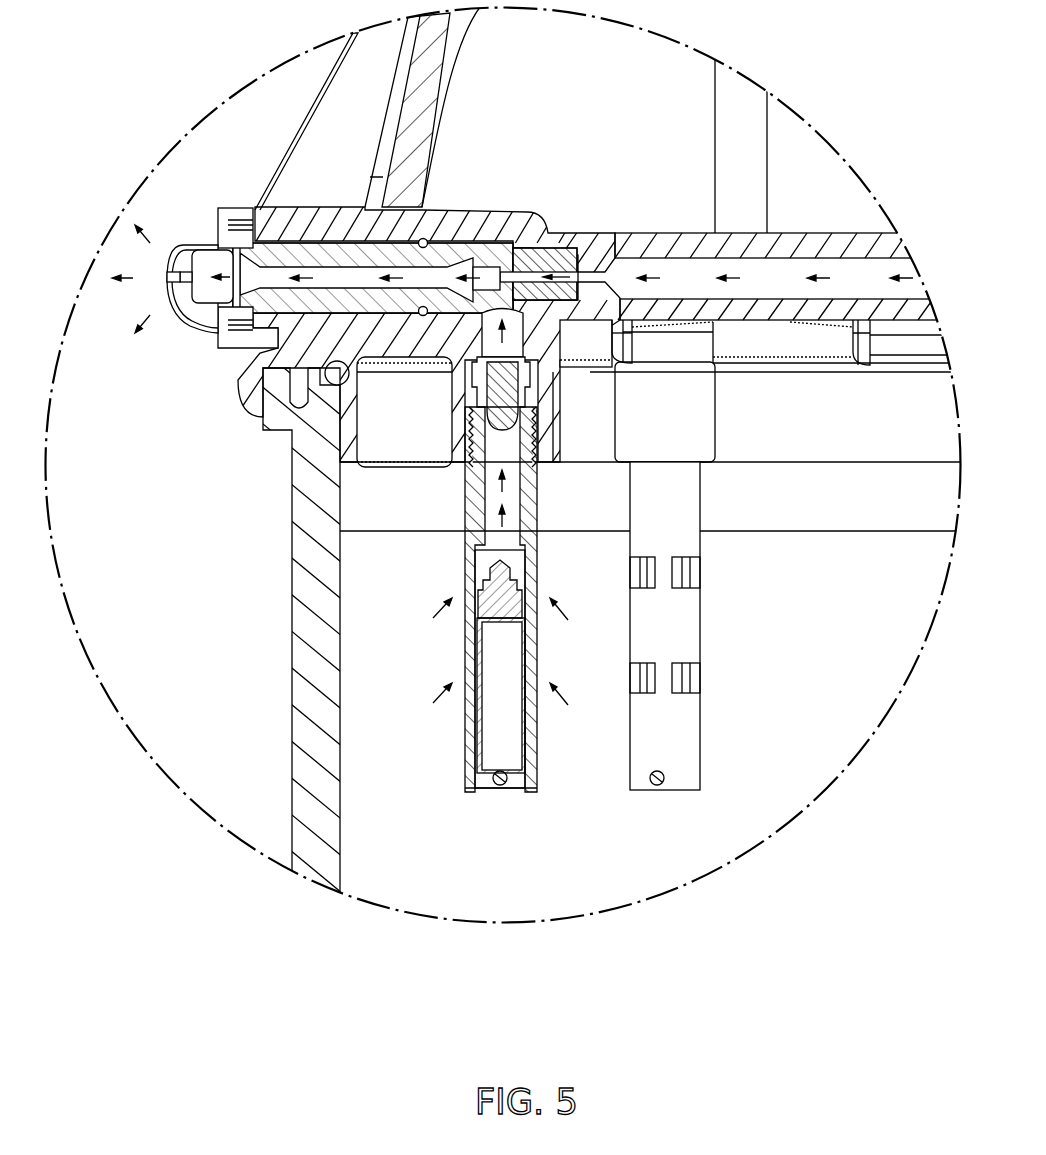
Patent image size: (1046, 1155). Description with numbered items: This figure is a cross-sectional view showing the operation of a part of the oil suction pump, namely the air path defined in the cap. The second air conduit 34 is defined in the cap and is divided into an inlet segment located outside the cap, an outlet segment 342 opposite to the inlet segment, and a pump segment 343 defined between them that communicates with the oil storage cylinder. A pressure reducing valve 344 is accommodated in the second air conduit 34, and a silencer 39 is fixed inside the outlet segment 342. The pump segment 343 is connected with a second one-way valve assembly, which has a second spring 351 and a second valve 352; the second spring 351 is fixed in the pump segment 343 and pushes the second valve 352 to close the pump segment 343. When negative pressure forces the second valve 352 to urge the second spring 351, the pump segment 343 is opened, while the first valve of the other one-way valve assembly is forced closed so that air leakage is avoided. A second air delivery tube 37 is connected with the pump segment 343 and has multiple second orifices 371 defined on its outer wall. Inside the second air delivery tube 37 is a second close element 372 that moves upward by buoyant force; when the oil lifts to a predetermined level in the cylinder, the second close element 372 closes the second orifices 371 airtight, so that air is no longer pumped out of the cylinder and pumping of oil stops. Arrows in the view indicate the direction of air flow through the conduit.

The second air conduit 34 is at (627, 265).
The pressure reducing valve 344 is at (538, 220).
The silencer 39 is at (440, 217).
The outlet segment 342 is at (188, 228).
The pump segment 343 is at (493, 335).
The second spring 351 is at (473, 368).
The second valve 352 is at (473, 395).
The second air delivery tube 37 is at (456, 670).
The second orifices 371 is at (465, 575).
The second close element 372 is at (467, 648).